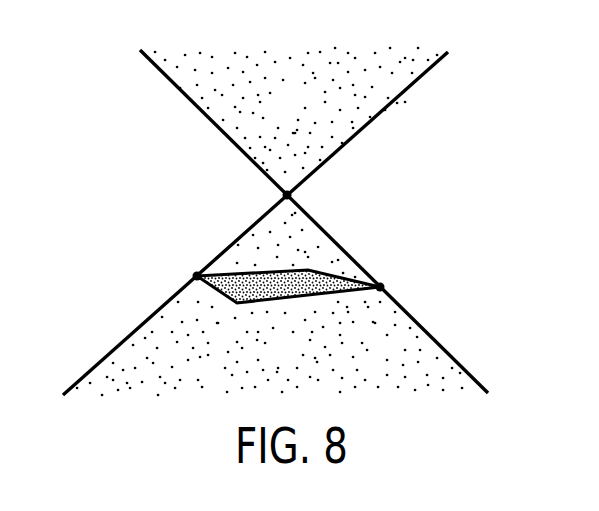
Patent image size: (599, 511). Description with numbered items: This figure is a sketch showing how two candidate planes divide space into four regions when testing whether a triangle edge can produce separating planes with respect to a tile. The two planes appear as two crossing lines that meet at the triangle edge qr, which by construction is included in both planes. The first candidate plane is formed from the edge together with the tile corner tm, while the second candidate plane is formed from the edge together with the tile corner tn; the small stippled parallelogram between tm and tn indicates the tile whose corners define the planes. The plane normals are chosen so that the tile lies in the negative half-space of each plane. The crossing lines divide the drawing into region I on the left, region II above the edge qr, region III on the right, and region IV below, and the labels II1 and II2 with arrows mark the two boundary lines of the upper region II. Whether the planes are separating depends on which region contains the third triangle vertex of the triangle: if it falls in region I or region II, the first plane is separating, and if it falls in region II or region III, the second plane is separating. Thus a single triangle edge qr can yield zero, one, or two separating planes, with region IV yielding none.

The region I is at (129, 200).
The region II is at (298, 114).
The region III is at (474, 200).
The region IV is at (301, 342).
The boundary line II1 of region II II1 is at (75, 320).
The boundary line II2 of region II II2 is at (428, 335).
The triangle edge qr is at (303, 192).
The tile corner t^m tm is at (269, 279).
The tile corner t^n tn is at (393, 276).